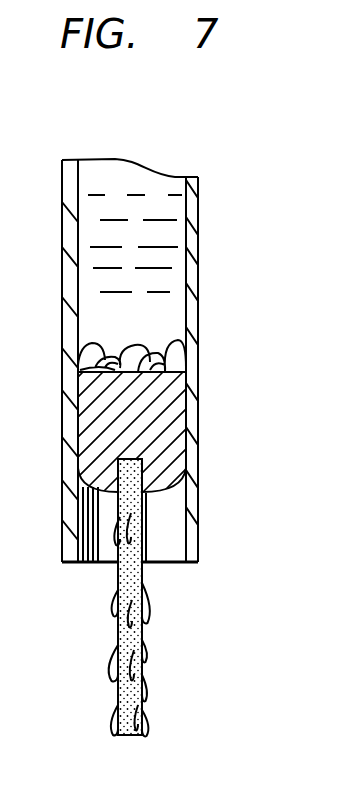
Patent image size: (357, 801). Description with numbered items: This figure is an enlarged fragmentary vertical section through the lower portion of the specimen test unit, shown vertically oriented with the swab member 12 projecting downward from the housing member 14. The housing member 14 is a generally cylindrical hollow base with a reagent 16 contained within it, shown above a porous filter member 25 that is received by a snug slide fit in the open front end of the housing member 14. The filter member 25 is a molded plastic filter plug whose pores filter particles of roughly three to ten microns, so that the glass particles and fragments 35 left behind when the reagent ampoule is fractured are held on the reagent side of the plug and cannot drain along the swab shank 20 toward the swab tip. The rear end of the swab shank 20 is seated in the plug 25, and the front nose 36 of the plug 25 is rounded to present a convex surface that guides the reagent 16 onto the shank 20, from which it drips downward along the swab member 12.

The housing member 14 is at (198, 288).
The reagent 16 is at (170, 203).
The glass particles and fragments 35 is at (180, 350).
The filter member 25 is at (178, 412).
The front nose 36 is at (190, 512).
The swab member 12 is at (145, 642).
The swab shank 20 is at (146, 682).